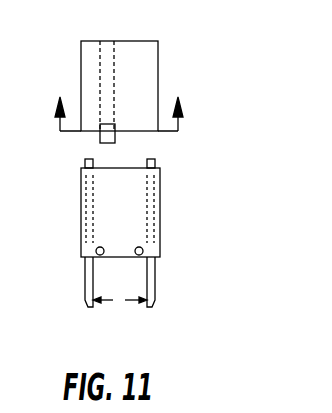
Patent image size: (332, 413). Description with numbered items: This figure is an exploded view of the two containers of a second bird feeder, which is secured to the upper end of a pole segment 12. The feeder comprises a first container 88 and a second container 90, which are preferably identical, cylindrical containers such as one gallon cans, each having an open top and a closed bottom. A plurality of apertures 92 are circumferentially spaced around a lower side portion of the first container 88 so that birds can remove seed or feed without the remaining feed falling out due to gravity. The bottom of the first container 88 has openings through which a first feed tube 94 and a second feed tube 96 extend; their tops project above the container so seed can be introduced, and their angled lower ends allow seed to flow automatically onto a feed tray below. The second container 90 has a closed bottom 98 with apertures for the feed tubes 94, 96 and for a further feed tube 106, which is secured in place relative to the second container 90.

The pole segment 12 is at (119, 108).
The first container 88 is at (160, 229).
The second container 90 is at (158, 83).
The apertures 92 is at (138, 246).
The first feed tube 94 is at (93, 193).
The second feed tube 96 is at (156, 163).
The closed bottom 98 is at (147, 137).
The feed tube 106 is at (114, 58).